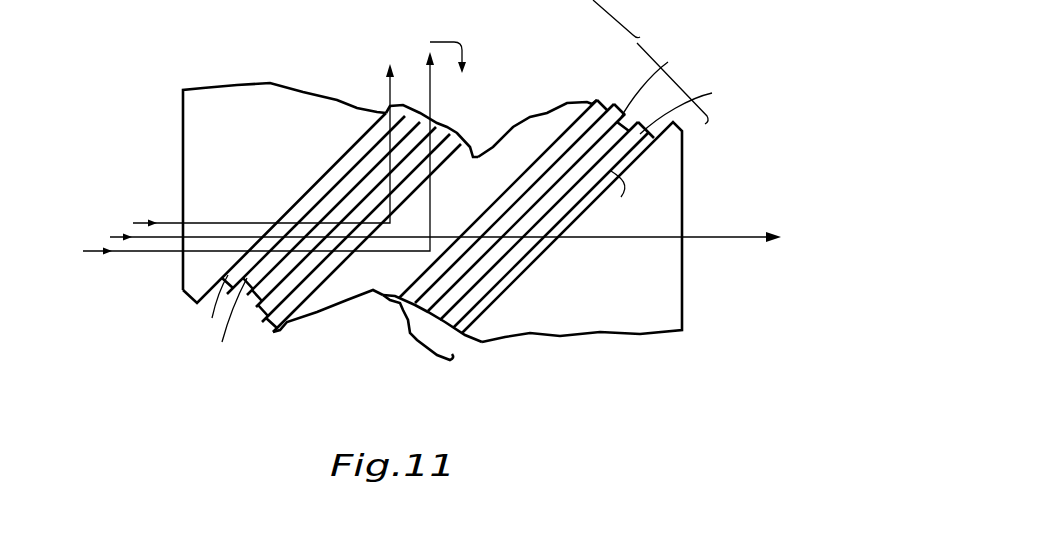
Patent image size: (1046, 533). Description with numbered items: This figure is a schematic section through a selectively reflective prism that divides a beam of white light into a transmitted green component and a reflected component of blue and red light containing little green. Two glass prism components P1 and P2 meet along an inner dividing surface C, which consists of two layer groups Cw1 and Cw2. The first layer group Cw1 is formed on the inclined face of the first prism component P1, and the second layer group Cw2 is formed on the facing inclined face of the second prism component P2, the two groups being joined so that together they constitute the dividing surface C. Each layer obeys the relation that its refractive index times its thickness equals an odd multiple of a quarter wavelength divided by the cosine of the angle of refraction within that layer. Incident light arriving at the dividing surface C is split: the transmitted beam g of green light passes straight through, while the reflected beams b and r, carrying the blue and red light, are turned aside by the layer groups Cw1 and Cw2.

The prism component P1 is at (284, 193).
The prism component P2 is at (572, 232).
The layer group Cw1 is at (528, 70).
The layer group Cw2 is at (494, 404).
The inner dividing surface C is at (650, 62).
The reflected blue beam b is at (390, 93).
The transmitted beam g is at (442, 235).
The reflected red beam r is at (430, 79).